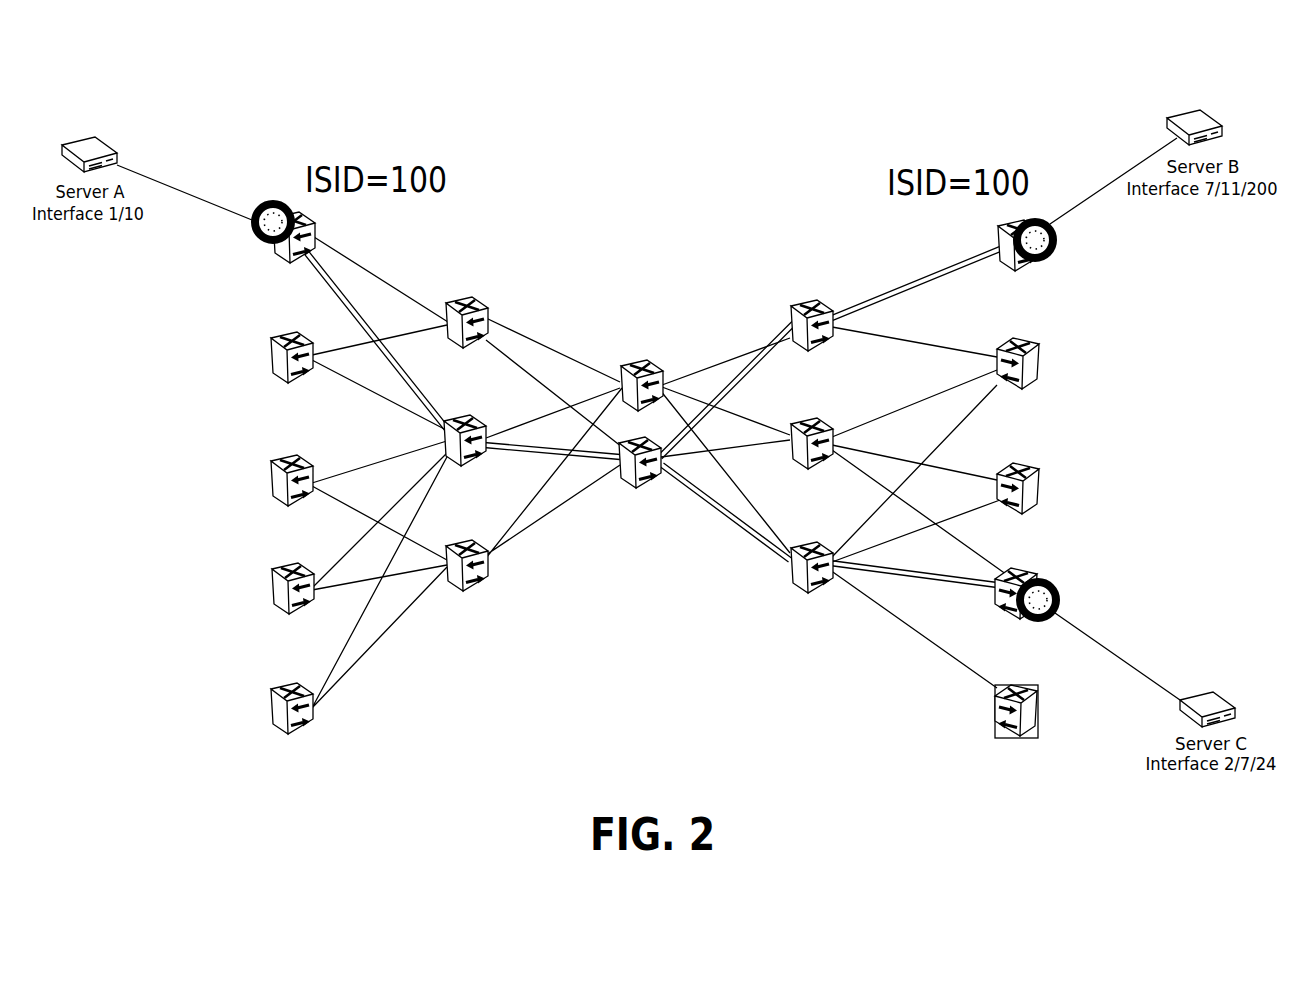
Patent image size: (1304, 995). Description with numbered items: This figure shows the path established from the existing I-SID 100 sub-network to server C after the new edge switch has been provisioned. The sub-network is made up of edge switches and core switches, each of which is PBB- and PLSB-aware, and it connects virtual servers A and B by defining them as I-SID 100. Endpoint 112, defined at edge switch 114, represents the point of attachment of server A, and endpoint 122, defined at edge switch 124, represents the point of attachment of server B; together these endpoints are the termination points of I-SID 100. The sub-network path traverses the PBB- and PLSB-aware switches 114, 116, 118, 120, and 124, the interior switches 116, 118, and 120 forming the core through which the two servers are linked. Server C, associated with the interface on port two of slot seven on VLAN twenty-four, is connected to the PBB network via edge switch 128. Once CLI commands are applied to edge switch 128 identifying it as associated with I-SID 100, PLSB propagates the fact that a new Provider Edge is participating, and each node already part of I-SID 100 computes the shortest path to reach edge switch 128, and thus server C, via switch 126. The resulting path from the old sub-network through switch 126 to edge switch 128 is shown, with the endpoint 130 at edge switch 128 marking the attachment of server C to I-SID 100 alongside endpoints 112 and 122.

The I-SID 100 is at (617, 160).
The endpoint 112 is at (267, 200).
The edge switch 114 is at (287, 262).
The switch 116 is at (480, 468).
The switch 118 is at (642, 487).
The switch 120 is at (798, 300).
The endpoint 122 is at (1023, 267).
The edge switch 124 is at (1042, 217).
The switch 126 is at (817, 593).
The edge switch 128 is at (1027, 574).
The service instance endpoint at Server C 130 is at (1060, 595).